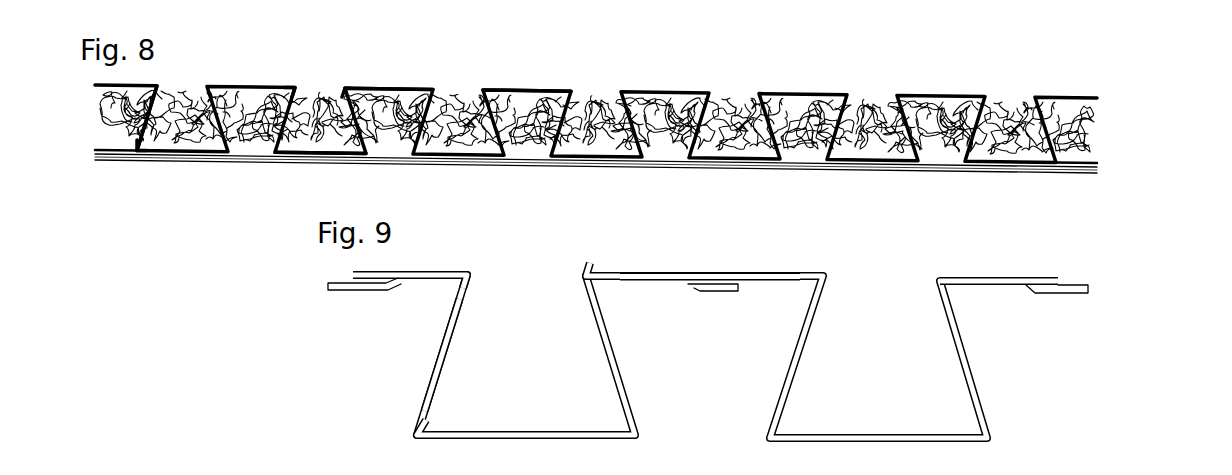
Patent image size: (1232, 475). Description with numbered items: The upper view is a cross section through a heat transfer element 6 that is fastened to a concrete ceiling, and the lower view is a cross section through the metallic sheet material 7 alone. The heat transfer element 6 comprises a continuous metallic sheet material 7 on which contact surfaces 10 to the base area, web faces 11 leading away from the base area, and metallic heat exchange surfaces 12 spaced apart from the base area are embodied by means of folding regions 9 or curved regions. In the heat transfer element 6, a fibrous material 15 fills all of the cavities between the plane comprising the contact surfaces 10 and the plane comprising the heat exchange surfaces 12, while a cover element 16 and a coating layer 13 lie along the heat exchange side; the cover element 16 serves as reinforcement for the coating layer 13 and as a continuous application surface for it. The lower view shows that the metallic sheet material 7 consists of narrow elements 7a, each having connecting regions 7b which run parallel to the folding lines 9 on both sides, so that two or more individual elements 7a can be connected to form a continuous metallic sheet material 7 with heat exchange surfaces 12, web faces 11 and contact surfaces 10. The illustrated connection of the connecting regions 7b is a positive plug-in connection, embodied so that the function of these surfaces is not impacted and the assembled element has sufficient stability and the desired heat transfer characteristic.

In FIG. 8, the heat transfer element 6 is at (1083, 77).
In FIG. 8, the metallic sheet material 7 is at (1097, 100).
In FIG. 9, the metallic sheet material 7 is at (1060, 257).
In FIG. 9, the narrow element 7a is at (603, 258).
In FIG. 9, the connecting region 7b is at (732, 272).
In FIG. 8, the folding region 9 is at (343, 83).
In FIG. 9, the folding region 9 is at (581, 275).
In FIG. 8, the contact surface 10 is at (523, 88).
In FIG. 9, the contact surface 10 is at (710, 270).
In FIG. 8, the web face 11 is at (147, 118).
In FIG. 9, the web face 11 is at (440, 350).
In FIG. 8, the heat exchange surface 12 is at (283, 160).
In FIG. 9, the heat exchange surface 12 is at (530, 440).
In FIG. 8, the coating layer 13 is at (1060, 172).
In FIG. 8, the fibrous material 15 is at (592, 90).
In FIG. 8, the cover element 16 is at (1095, 167).